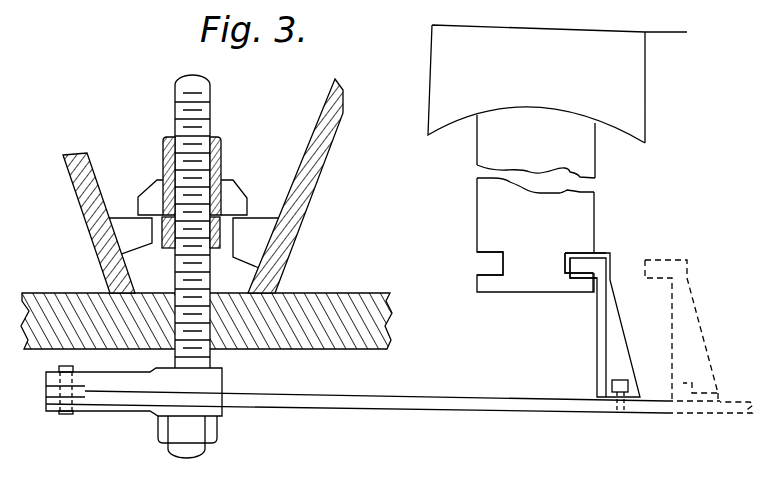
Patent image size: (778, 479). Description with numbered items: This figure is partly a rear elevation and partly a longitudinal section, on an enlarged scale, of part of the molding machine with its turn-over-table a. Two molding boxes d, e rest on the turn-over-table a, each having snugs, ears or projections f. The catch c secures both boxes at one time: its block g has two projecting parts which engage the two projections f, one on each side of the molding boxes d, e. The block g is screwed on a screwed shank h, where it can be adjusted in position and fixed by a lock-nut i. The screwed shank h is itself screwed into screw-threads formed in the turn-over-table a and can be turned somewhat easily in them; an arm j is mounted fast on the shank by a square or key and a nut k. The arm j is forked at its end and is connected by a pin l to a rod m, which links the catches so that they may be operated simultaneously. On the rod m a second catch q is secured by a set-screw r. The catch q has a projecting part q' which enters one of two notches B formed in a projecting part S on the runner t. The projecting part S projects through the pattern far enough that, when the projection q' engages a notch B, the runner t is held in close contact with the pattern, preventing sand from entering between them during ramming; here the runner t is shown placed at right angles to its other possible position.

The turn-over-table a is at (67, 300).
The catch c is at (202, 176).
The molding box d is at (91, 223).
The molding box e is at (295, 186).
The projection f is at (194, 243).
The block g is at (157, 180).
The screwed shank h is at (206, 217).
The lock-nut i is at (221, 148).
The arm j is at (134, 407).
The nut k is at (218, 436).
The pin l is at (63, 405).
The rod m is at (399, 388).
The runner t is at (557, 101).
The projecting part S is at (535, 235).
The notch B is at (612, 240).
The catch q is at (641, 311).
The projecting part q' is at (573, 295).
The set-screw r is at (620, 385).